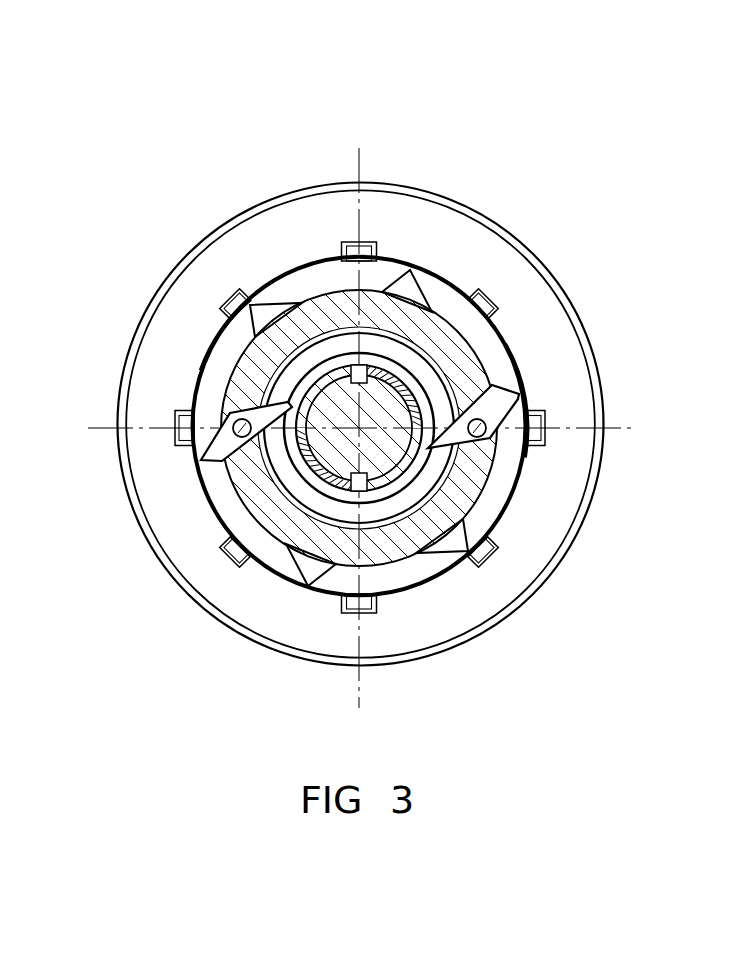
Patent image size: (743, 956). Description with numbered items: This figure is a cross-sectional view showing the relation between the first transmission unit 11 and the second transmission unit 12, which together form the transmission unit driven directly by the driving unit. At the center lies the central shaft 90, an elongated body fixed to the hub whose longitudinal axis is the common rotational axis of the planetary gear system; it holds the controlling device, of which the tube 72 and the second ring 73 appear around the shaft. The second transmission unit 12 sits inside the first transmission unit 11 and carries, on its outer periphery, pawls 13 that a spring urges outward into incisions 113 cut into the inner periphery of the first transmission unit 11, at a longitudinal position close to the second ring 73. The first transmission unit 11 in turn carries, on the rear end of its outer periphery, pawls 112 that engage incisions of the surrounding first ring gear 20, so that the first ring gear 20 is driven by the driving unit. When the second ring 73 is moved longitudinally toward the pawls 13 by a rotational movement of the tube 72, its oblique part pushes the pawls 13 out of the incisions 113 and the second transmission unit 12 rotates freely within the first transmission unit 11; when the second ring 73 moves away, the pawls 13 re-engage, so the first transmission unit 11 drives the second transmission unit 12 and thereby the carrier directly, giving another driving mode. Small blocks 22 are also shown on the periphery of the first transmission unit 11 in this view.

The first transmission unit 11 is at (370, 460).
The second transmission unit 12 is at (371, 428).
The pawls 13 is at (360, 412).
The first ring gear 20 is at (361, 397).
The locking blocks 22 is at (359, 337).
The tube 72 is at (297, 360).
The second ring 73 is at (465, 398).
The central shaft 90 is at (253, 471).
The pawls 112 is at (217, 253).
The incisions 113 is at (590, 401).